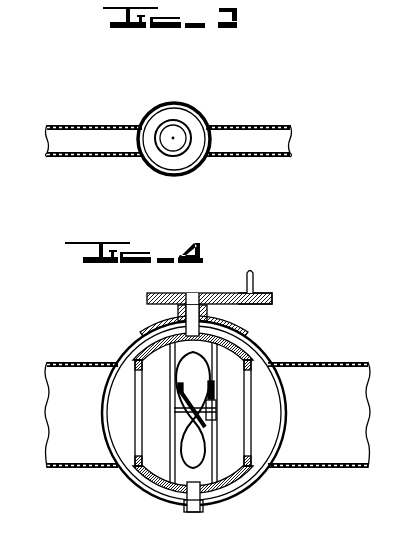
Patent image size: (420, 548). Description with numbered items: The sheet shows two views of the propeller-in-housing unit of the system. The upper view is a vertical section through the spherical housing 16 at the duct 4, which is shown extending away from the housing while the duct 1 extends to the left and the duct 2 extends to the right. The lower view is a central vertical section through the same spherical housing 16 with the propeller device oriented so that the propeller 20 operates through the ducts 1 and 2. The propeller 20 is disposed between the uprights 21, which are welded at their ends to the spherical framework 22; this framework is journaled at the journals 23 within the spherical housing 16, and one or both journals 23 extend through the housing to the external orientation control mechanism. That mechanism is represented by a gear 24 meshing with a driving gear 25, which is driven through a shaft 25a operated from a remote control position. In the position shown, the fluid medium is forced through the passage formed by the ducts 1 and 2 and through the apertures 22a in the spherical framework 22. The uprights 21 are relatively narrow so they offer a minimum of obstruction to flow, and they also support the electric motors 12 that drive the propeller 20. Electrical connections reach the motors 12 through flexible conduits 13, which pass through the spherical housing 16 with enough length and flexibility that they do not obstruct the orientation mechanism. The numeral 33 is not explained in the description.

In FIG. 2, the duct 1 is at (112, 142).
In FIG. 4, the duct 1 is at (82, 395).
In FIG. 2, the duct 2 is at (243, 136).
In FIG. 4, the duct 2 is at (335, 400).
In FIG. 2, the duct 4 is at (175, 156).
In FIG. 4, the electric motor 12 is at (176, 410).
In FIG. 4, the flexible conduit 13 is at (180, 390).
In FIG. 2, the spherical housing 16 is at (186, 108).
In FIG. 4, the spherical housing 16 is at (133, 343).
In FIG. 4, the propeller 20 is at (199, 462).
In FIG. 4, the upright 21 is at (138, 482).
In FIG. 4, the spherical framework 22 is at (238, 352).
In FIG. 4, the aperture 22a is at (117, 450).
In FIG. 4, the journal 23 is at (208, 494).
In FIG. 4, the gear 24 is at (171, 293).
In FIG. 4, the driving gear 25 is at (268, 296).
In FIG. 4, the shaft 25a is at (253, 273).
In FIG. 4, the packing gland 33 is at (178, 318).